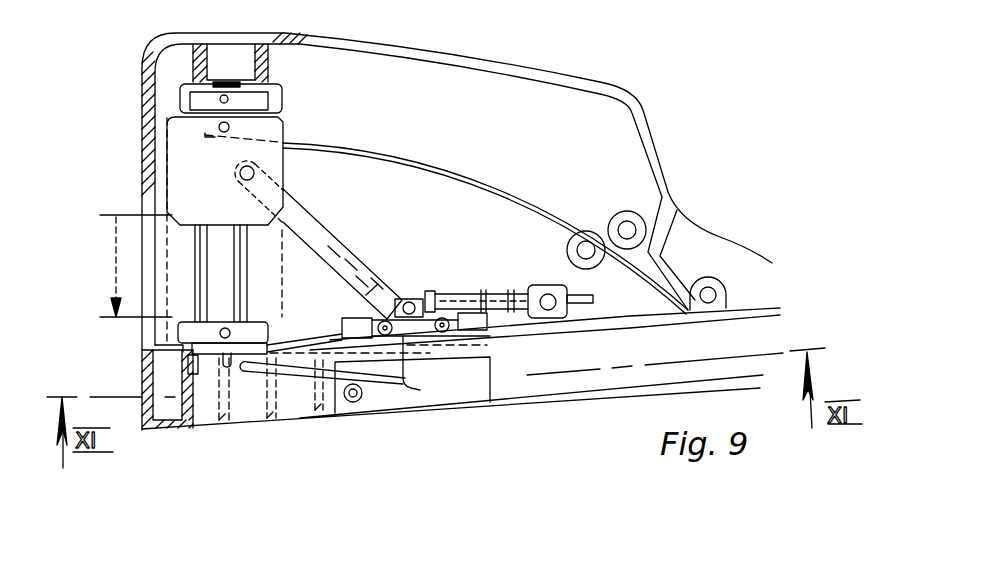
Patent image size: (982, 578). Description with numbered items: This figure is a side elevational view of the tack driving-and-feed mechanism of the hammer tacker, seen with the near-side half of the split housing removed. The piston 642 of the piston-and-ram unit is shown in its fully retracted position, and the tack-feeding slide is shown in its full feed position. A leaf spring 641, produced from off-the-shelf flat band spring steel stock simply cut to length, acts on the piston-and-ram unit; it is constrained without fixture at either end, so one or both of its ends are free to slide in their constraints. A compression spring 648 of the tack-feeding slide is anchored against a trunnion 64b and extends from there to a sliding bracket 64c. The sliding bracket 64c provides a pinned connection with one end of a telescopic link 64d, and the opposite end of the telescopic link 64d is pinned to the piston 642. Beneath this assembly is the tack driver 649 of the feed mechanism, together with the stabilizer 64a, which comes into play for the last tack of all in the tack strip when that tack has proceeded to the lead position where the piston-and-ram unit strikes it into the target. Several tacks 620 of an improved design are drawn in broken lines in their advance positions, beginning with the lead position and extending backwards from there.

The leaf spring 641 is at (408, 160).
The piston 642 is at (212, 210).
The telescopic link 64d is at (352, 250).
The sliding bracket 64c is at (417, 298).
The compression spring 648 is at (491, 280).
The trunnion 64b is at (530, 284).
The tack driver 649 is at (345, 325).
The stabilizer 64a is at (422, 389).
The tacks 620 is at (240, 430).